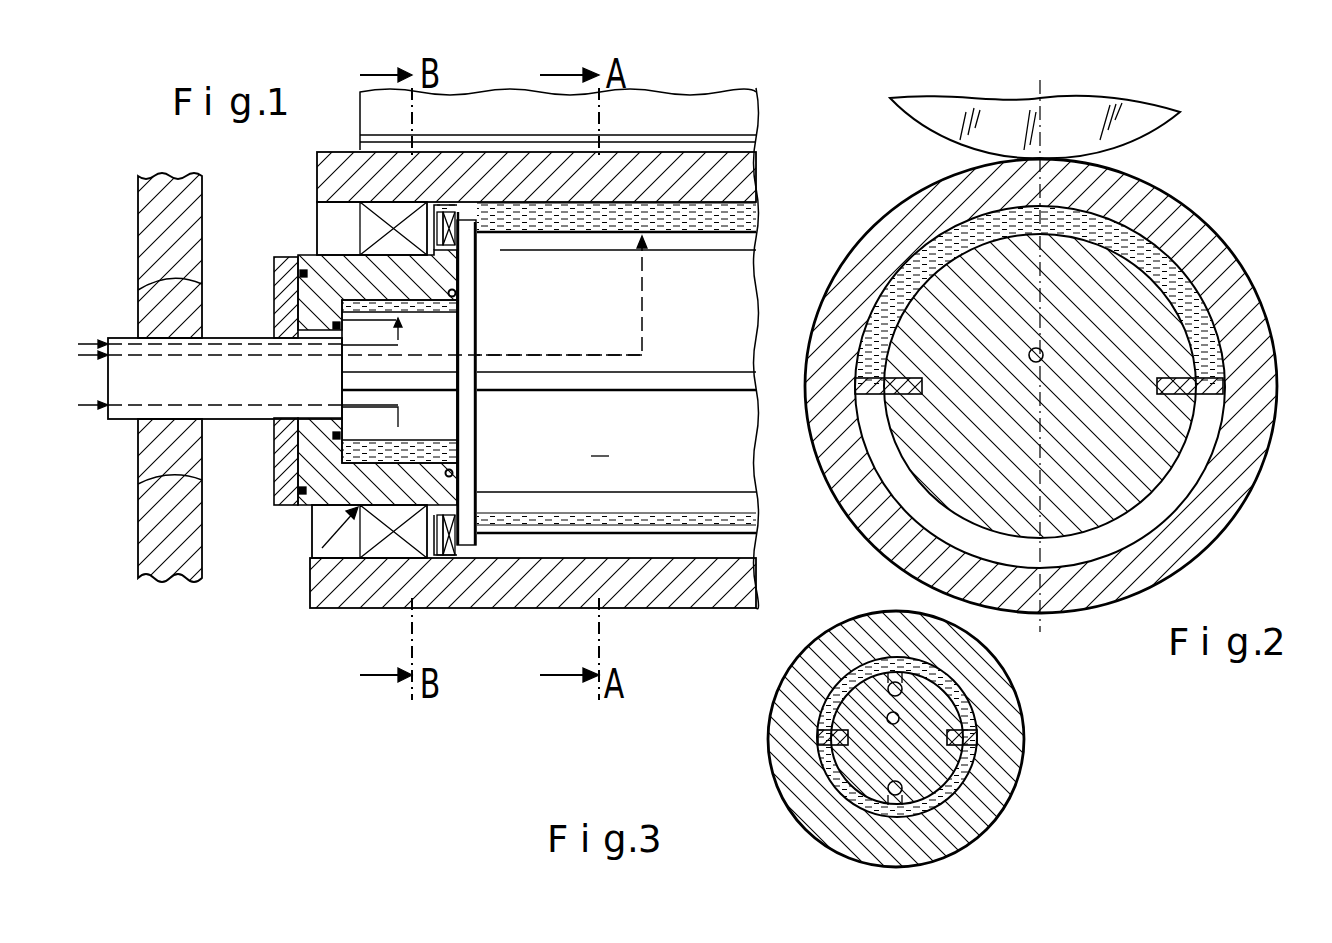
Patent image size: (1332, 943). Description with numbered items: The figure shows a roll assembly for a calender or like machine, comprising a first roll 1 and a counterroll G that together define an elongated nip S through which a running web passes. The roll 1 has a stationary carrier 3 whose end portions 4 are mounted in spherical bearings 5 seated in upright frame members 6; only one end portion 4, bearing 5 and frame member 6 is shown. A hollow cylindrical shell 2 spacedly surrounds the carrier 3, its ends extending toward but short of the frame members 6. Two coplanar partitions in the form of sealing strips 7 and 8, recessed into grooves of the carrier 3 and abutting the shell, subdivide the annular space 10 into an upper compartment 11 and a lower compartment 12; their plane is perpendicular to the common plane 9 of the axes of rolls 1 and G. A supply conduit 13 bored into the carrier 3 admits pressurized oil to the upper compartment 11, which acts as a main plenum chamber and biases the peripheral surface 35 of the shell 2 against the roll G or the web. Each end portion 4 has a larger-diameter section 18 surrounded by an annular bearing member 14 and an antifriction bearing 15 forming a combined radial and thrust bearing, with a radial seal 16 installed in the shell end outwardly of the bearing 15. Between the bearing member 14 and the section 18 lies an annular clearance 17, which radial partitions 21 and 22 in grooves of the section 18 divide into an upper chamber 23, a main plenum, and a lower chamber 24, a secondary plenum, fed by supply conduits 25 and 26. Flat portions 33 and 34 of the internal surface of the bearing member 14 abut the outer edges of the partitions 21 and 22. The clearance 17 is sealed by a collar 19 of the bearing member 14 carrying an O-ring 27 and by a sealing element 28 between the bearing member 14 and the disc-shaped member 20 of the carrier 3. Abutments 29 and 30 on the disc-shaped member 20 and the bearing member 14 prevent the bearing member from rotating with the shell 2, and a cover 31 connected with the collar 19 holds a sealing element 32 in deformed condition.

In FIG. 1, the first roll 1 is at (768, 169).
In FIG. 2, the first roll 1 is at (1203, 208).
In FIG. 1, the shell 2 is at (735, 185).
In FIG. 2, the shell 2 is at (1198, 244).
In FIG. 1, the carrier 3 is at (616, 382).
In FIG. 2, the carrier 3 is at (1175, 438).
In FIG. 1, the end portion 4 is at (127, 395).
In FIG. 1, the spherical bearing 5 is at (160, 482).
In FIG. 1, the frame member 6 is at (172, 565).
In FIG. 2, the sealing strip 7 is at (858, 400).
In FIG. 1, the partition 8 is at (705, 383).
In FIG. 2, the partition 8 is at (1226, 386).
In FIG. 2, the common plane 9 is at (1035, 627).
In FIG. 2, the annular space 10 is at (1152, 503).
In FIG. 1, the upper compartment 11 is at (675, 215).
In FIG. 2, the upper compartment 11 is at (942, 250).
In FIG. 2, the lower compartment 12 is at (915, 500).
In FIG. 1, the supply conduit 13 is at (643, 292).
In FIG. 2, the supply conduit 13 is at (1045, 352).
In FIG. 3, the supply conduit 13 is at (890, 718).
In FIG. 1, the annular bearing member 14 is at (357, 277).
In FIG. 3, the annular bearing member 14 is at (985, 683).
In FIG. 1, the antifriction bearing 15 is at (362, 254).
In FIG. 1, the radial seal 16 is at (322, 217).
In FIG. 3, the annular clearance 17 is at (946, 681).
In FIG. 1, the larger-diameter section 18 is at (360, 440).
In FIG. 3, the larger-diameter section 18 is at (850, 762).
In FIG. 1, the collar 19 is at (322, 297).
In FIG. 1, the disc-shaped member 20 is at (467, 240).
In FIG. 3, the partition 21 is at (818, 740).
In FIG. 3, the partition 22 is at (977, 738).
In FIG. 1, the upper chamber 23 is at (412, 305).
In FIG. 3, the upper chamber 23 is at (877, 662).
In FIG. 1, the lower chamber 24 is at (387, 457).
In FIG. 3, the lower chamber 24 is at (855, 810).
In FIG. 1, the supply conduit 25 is at (398, 340).
In FIG. 3, the supply conduit 25 is at (880, 686).
In FIG. 1, the supply conduit 26 is at (398, 427).
In FIG. 3, the supply conduit 26 is at (902, 788).
In FIG. 1, the O-ring 27 is at (335, 326).
In FIG. 1, the sealing element 28 is at (457, 292).
In FIG. 1, the abutments 29 is at (455, 548).
In FIG. 1, the abutments 30 is at (447, 548).
In FIG. 1, the cover 31 is at (285, 445).
In FIG. 1, the sealing element 32 is at (298, 492).
In FIG. 3, the flat portion 33 is at (818, 722).
In FIG. 3, the flat portion 34 is at (977, 720).
In FIG. 1, the peripheral surface 35 is at (635, 150).
In FIG. 2, the peripheral surface 35 is at (878, 232).
In FIG. 1, the counterroll G is at (757, 120).
In FIG. 2, the counterroll G is at (940, 118).
In FIG. 2, the nip S is at (1105, 159).